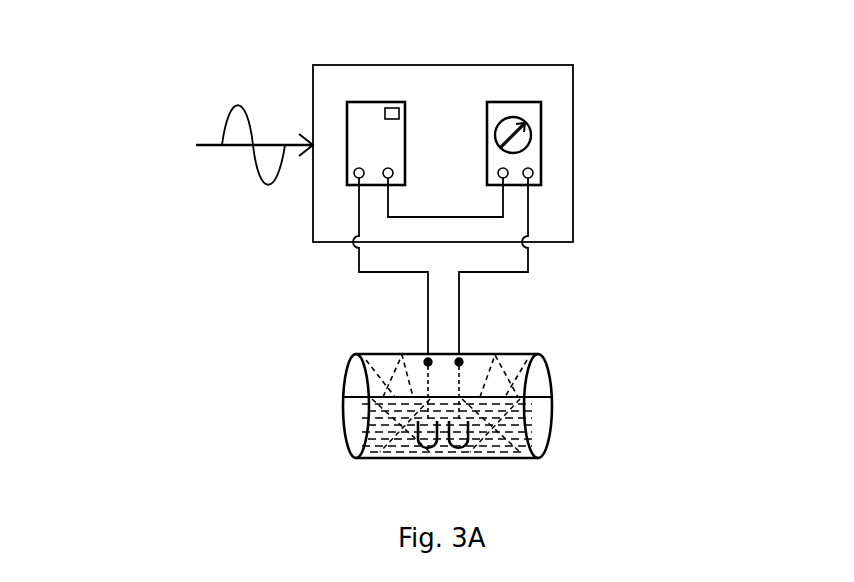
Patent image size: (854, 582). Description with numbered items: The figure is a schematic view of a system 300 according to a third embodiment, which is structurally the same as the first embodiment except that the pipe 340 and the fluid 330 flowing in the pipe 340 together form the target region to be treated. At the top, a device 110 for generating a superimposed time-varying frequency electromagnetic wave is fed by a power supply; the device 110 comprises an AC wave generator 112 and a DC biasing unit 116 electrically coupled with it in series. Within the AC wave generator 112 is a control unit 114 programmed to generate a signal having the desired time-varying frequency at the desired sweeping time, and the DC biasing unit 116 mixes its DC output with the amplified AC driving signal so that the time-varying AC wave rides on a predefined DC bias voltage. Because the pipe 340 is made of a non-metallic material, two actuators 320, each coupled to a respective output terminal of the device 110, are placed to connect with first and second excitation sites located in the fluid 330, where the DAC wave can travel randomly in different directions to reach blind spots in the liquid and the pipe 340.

The device for generating a superimposed time-varying frequency electromagnetic wave 110 is at (501, 178).
The AC wave generator 112 is at (378, 94).
The control unit 114 is at (390, 110).
The DC biasing unit 116 is at (530, 110).
The system 300 is at (421, 266).
The actuators 320 is at (383, 458).
The fluid 330 is at (545, 421).
The pipe 340 is at (347, 378).